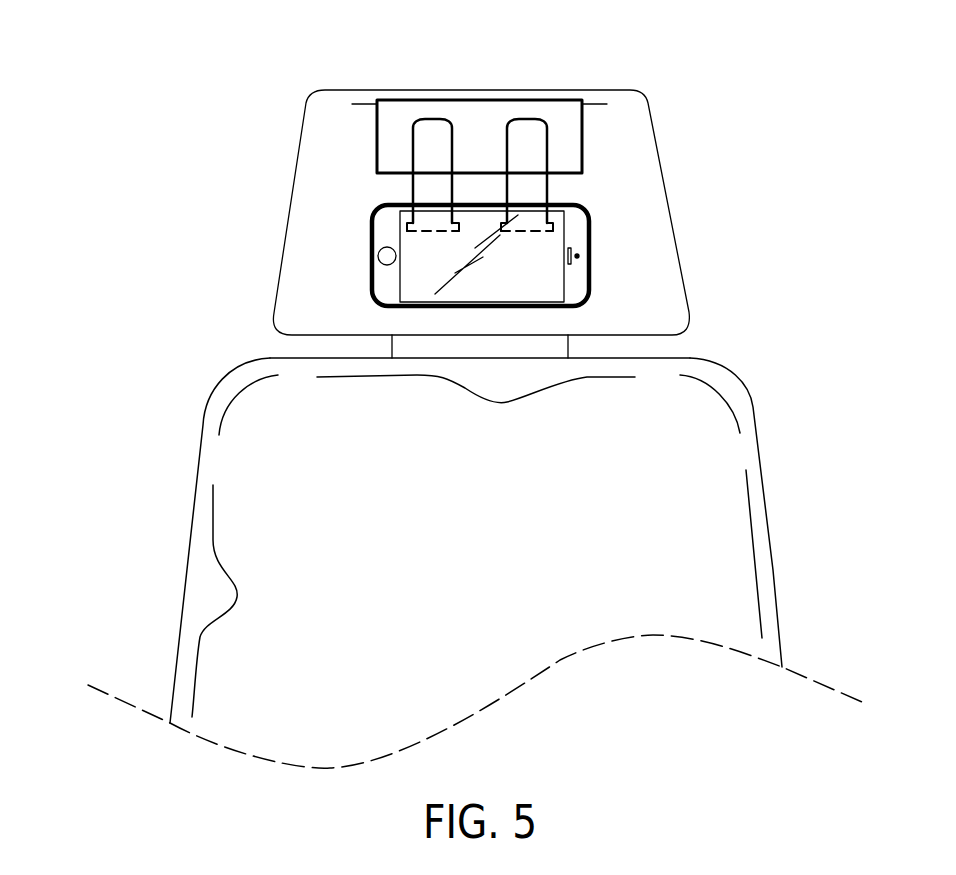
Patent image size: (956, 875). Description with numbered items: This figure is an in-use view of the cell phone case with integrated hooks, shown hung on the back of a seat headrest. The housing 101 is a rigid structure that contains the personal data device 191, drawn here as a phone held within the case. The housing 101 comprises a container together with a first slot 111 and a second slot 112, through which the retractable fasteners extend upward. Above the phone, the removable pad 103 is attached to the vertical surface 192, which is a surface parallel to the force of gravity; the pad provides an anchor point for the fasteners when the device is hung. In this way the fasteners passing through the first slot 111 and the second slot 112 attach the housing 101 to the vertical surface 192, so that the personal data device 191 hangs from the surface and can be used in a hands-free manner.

The housing 101 is at (589, 263).
The removable pad 103 is at (582, 128).
The first slot 111 is at (425, 122).
The second slot 112 is at (525, 122).
The personal data device 191 is at (542, 249).
The vertical surface 192 is at (615, 141).